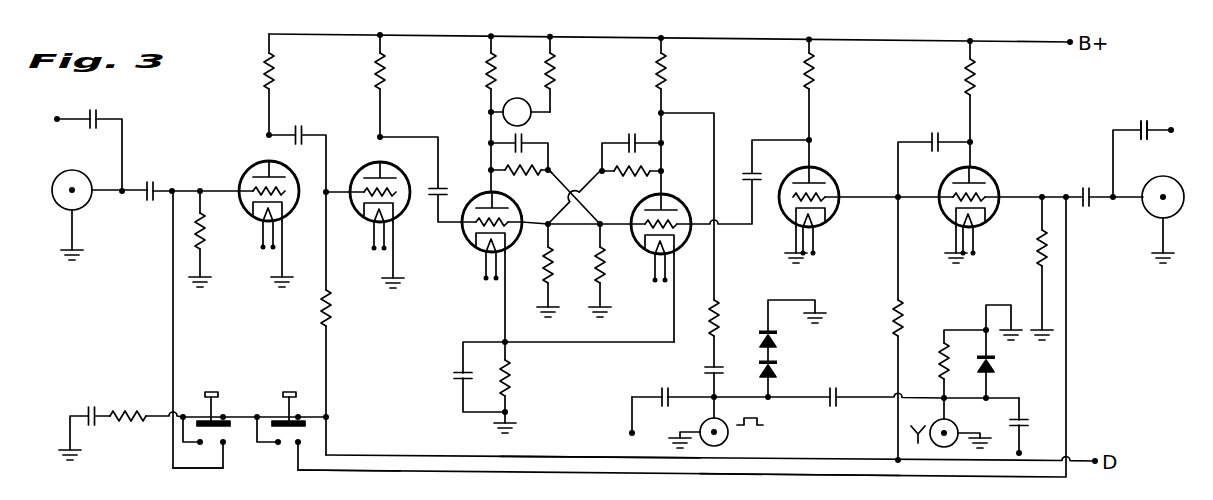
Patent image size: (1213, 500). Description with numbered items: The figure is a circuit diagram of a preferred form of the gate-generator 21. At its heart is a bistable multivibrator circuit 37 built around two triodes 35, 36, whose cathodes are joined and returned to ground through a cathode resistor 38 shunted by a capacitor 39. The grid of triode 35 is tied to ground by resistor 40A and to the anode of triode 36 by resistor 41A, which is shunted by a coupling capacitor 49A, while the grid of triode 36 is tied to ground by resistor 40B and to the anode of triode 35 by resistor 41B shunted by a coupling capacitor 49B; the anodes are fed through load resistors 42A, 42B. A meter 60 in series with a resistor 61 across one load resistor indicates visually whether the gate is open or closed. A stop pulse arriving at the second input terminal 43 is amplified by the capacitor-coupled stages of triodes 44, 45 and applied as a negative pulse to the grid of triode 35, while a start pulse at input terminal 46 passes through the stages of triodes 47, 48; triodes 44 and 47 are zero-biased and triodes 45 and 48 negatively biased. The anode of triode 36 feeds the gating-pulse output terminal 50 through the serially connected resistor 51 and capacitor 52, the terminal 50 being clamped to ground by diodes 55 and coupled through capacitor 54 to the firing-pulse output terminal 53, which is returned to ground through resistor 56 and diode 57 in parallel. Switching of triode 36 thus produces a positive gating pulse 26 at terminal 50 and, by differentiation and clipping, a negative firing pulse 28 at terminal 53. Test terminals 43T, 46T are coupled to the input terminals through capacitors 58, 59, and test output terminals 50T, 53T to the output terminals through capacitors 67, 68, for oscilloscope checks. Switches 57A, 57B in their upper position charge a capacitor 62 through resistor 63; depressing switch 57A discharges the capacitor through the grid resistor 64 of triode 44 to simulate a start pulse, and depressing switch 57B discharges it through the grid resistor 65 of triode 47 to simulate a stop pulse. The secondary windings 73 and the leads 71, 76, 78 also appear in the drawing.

The test terminal 43T is at (57, 119).
The coupling capacitor 58 is at (101, 116).
The second input terminal 43 is at (71, 190).
The grid resistor 64 is at (204, 230).
The triode 44 is at (246, 173).
The triode 45 is at (358, 214).
The load resistor 42A is at (487, 78).
The meter 60 is at (515, 97).
The resistor 61 is at (553, 89).
The coupling capacitor 49B is at (527, 134).
The bistable multivibrator circuit 37 is at (590, 164).
The resistor 41B is at (514, 178).
The triode 35 is at (466, 247).
The resistor 40A is at (553, 268).
The resistor 41A is at (620, 179).
The resistor 40B is at (604, 278).
The triode 36 is at (644, 247).
The load resistor 42B is at (666, 86).
The coupling capacitor 49A is at (633, 129).
The triode 48 is at (825, 171).
The triode 47 is at (992, 173).
The gate-generator 21 is at (1088, 101).
The coupling capacitor 59 is at (1144, 118).
The test terminal 46T is at (1173, 128).
The input terminal 46 is at (1166, 195).
The grid resistor 65 is at (1034, 250).
The resistor 51 is at (712, 304).
The capacitor 52 is at (706, 372).
The coupling capacitor 67 is at (661, 391).
The test output terminal 50T is at (631, 433).
The gating-pulse output terminal 50 is at (729, 437).
The gating pulse 26 is at (762, 419).
The diodes 55 is at (777, 369).
The capacitor 54 is at (835, 388).
The resistor 56 is at (941, 360).
The diode 57 is at (996, 364).
The coupling capacitor 68 is at (1022, 422).
The test output terminal 53T is at (1021, 452).
The firing pulse 28 is at (910, 435).
The firing-pulse output terminal 53 is at (944, 440).
The capacitor 62 is at (87, 407).
The resistor 63 is at (135, 407).
The switch 57A is at (211, 392).
The switch 57B is at (289, 392).
The cathode resistor 38 is at (512, 388).
The capacitor 39 is at (455, 382).
The conductor 71 is at (220, 484).
The high-voltage secondary windings 73 is at (380, 485).
The conductor 76 is at (600, 478).
The conductor 78 is at (800, 487).